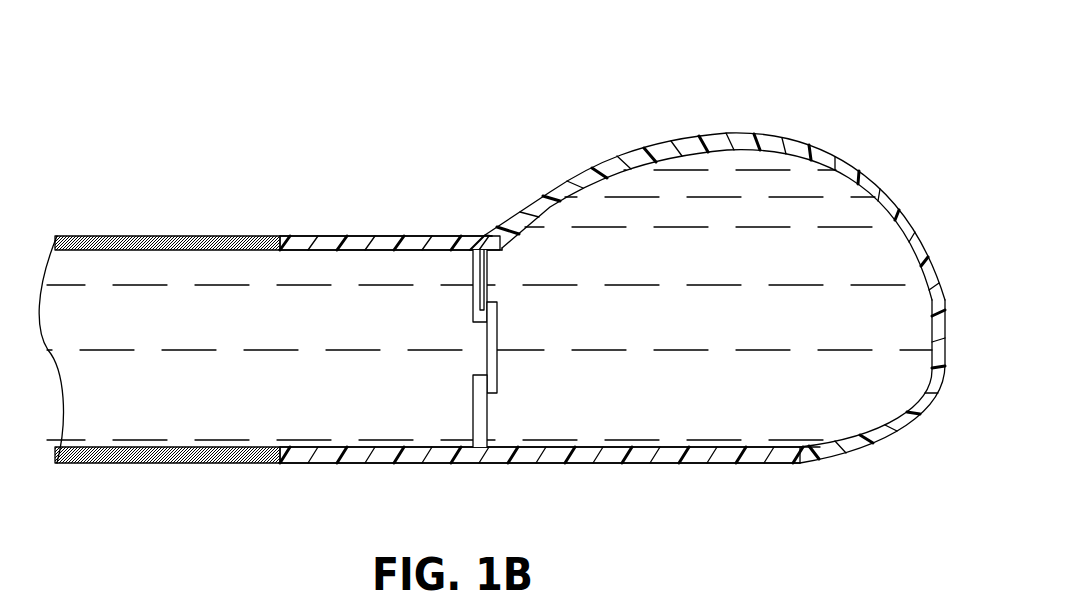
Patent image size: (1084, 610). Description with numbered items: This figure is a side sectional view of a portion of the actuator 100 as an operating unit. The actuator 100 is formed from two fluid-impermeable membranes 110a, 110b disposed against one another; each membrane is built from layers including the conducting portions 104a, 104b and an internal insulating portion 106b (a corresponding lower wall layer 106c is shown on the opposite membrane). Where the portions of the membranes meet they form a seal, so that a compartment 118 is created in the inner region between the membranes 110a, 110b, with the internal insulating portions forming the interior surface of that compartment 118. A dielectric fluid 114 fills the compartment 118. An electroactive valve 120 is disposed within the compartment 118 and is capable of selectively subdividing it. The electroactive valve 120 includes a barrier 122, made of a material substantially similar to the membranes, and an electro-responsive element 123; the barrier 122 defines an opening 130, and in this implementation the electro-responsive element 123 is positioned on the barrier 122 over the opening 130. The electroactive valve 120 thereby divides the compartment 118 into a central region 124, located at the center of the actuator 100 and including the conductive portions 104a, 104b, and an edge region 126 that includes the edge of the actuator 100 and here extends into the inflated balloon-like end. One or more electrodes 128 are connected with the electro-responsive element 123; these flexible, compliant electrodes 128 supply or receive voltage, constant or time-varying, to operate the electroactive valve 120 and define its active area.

The actuator 100 is at (500, 265).
The conducting portion 104a is at (245, 240).
The conducting portion 104b is at (205, 455).
The internal insulating portion 106b is at (385, 252).
The lower tube wall 106c is at (397, 463).
The fluid-impermeable membrane 110a is at (812, 140).
The fluid-impermeable membrane 110b is at (858, 438).
The dielectric fluid 114 is at (203, 283).
The compartment 118 is at (343, 270).
The electroactive valve 120 is at (482, 345).
The barrier 122 is at (486, 233).
The electro-responsive element 123 is at (489, 302).
The central region 124 is at (137, 313).
The edge region 126 is at (867, 248).
The electrode 128 is at (477, 237).
The opening 130 is at (483, 375).